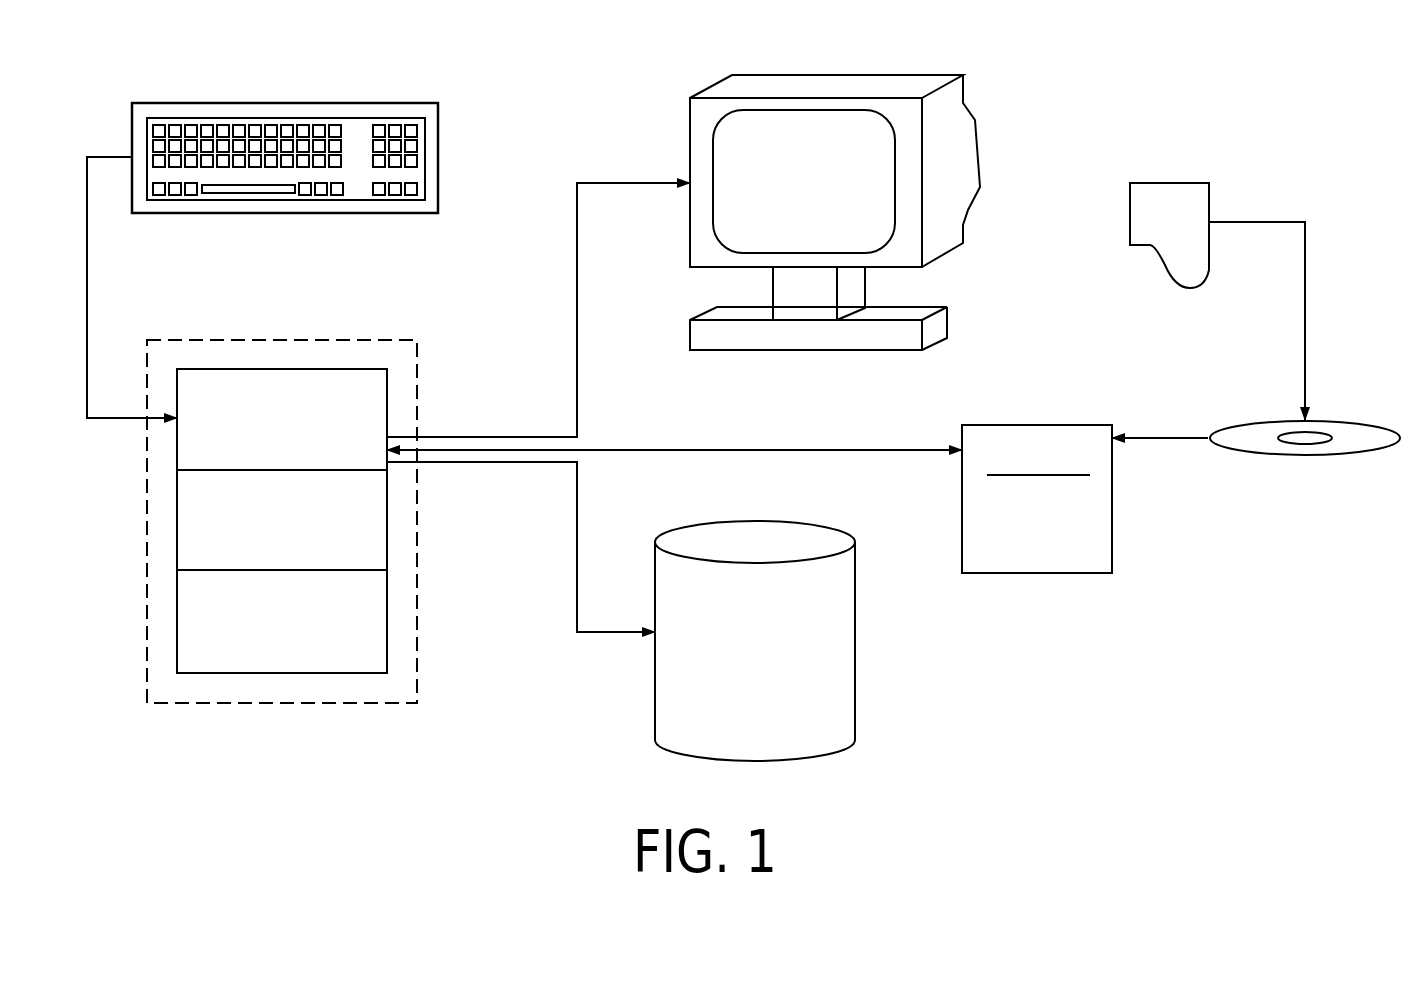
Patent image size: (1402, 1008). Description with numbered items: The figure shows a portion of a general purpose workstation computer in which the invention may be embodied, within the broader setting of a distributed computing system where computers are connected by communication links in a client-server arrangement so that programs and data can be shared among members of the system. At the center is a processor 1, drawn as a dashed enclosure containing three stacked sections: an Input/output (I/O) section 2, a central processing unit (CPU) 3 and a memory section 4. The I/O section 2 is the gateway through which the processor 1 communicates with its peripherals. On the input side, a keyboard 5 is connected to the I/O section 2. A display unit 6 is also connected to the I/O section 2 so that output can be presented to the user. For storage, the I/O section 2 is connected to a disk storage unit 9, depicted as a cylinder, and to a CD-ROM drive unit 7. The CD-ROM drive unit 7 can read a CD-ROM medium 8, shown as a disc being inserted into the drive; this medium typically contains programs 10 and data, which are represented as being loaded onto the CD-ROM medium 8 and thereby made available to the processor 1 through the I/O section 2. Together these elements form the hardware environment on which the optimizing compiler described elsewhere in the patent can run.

The processor 1 is at (353, 340).
The Input/output section 2 is at (212, 382).
The central processing unit 3 is at (365, 548).
The memory section 4 is at (365, 652).
The keyboard 5 is at (438, 160).
The display unit 6 is at (690, 148).
The CD-ROM drive unit 7 is at (1033, 425).
The CD-ROM medium 8 is at (1255, 423).
The disk storage unit 9 is at (855, 640).
The programs 10 is at (1130, 212).